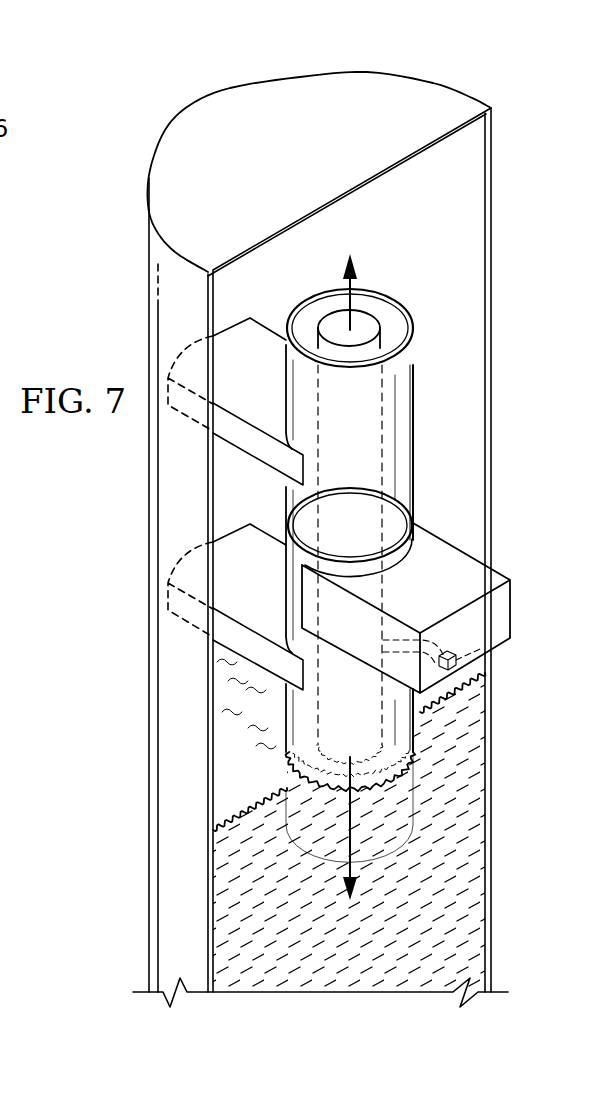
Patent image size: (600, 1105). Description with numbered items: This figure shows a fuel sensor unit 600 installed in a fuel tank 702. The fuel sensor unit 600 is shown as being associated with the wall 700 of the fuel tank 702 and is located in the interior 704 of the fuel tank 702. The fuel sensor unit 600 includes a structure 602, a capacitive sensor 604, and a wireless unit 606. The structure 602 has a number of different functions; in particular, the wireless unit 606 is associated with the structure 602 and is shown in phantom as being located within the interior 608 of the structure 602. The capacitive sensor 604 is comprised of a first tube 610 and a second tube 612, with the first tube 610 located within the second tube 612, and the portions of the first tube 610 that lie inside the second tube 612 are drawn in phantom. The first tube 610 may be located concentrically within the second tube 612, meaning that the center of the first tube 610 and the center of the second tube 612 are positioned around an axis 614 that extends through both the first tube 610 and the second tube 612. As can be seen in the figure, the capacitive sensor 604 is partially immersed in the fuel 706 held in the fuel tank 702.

The wall 700 is at (452, 90).
The fuel tank 702 is at (266, 79).
The interior 704 is at (184, 101).
The fuel 706 is at (250, 806).
The capacitive sensor 604 is at (422, 236).
The fuel sensor unit 600 is at (430, 372).
The structure 602 is at (418, 528).
The wireless unit 606 is at (472, 657).
The interior 608 is at (496, 580).
The first tube 610 is at (372, 313).
The second tube 612 is at (293, 309).
The axis 614 is at (353, 287).